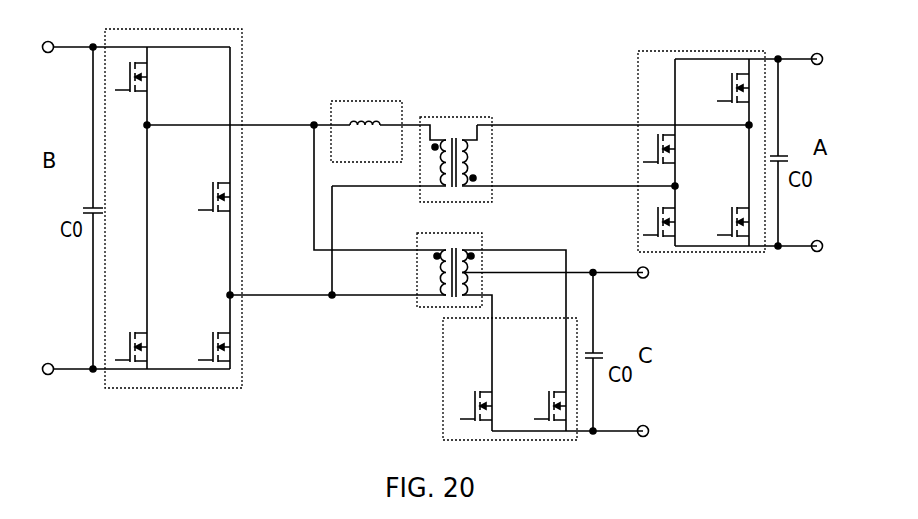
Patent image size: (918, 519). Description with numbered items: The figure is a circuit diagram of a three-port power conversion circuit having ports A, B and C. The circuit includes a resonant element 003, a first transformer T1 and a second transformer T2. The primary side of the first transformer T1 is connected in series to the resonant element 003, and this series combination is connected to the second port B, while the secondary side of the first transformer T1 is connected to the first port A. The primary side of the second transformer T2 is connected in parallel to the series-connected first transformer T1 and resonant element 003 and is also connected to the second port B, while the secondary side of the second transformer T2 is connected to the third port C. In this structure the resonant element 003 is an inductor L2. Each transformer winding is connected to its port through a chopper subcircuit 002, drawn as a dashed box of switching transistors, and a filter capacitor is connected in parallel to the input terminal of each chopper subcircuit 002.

The chopper subcircuit 002 is at (243, 72).
The resonant element 003 is at (366, 105).
The first transformer T1 is at (440, 115).
The second transformer T2 is at (428, 308).
The inductor L2 is at (365, 139).